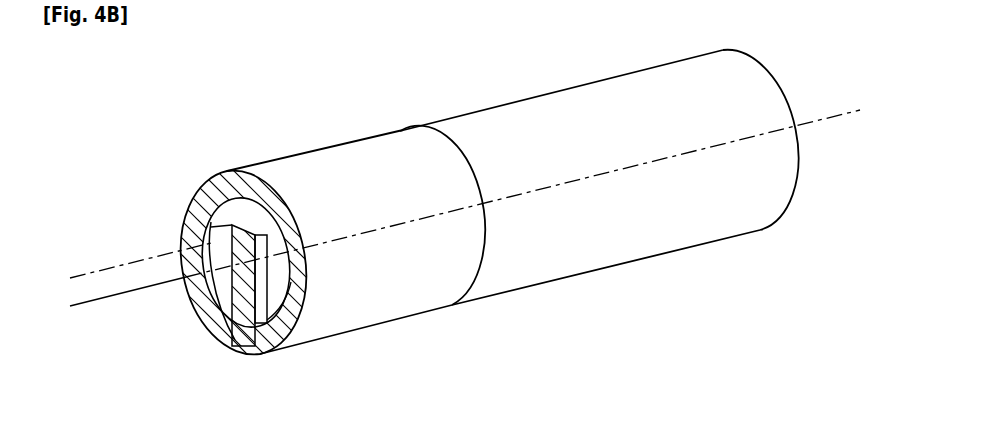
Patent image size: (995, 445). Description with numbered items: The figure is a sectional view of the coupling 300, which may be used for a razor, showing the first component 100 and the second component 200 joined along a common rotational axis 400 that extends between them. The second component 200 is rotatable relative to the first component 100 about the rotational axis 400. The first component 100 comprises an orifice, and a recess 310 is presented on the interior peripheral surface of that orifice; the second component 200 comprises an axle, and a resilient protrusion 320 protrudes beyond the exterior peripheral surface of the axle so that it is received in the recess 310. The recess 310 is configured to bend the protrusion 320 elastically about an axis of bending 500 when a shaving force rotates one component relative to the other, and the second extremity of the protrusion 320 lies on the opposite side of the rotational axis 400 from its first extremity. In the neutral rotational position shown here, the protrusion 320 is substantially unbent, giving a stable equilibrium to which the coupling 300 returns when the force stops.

The first component 100 is at (343, 148).
The second component 200 is at (603, 96).
The coupling 300 is at (262, 206).
The recess 310 is at (236, 348).
The resilient protrusion 320 is at (278, 326).
The rotational axis 400 is at (136, 290).
The axis of bending 500 is at (110, 268).